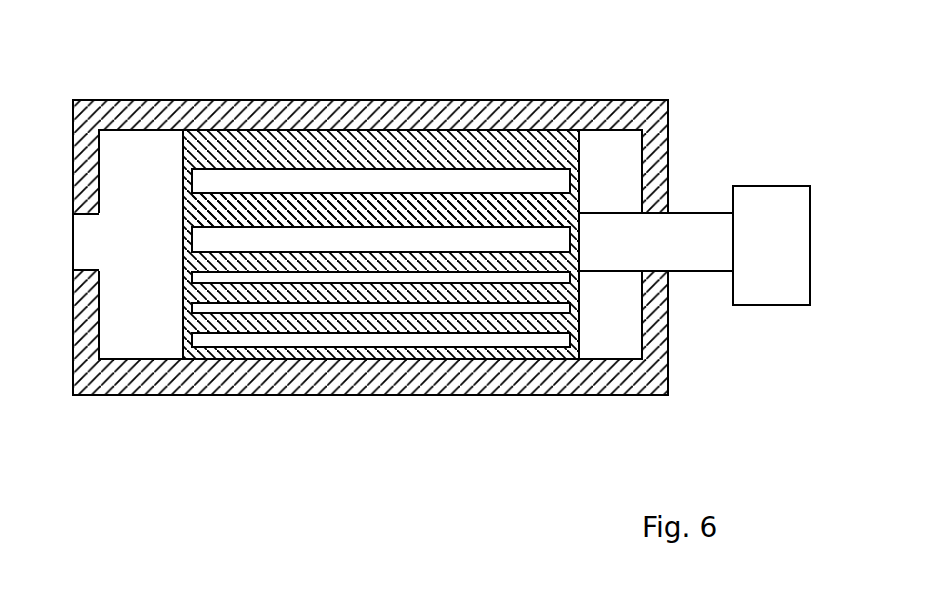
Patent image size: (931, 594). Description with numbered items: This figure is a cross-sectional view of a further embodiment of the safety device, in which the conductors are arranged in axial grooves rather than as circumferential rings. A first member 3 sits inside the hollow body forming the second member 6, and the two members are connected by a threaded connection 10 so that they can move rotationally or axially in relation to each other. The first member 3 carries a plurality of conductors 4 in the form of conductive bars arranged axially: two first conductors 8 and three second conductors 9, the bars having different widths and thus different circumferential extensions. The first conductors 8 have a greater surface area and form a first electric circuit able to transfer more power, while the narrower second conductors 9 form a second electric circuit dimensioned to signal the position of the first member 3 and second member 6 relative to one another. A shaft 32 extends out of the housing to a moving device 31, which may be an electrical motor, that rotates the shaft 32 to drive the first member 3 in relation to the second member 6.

The first member 3 is at (215, 343).
The conductors 4 is at (217, 185).
The second member 6 is at (622, 108).
The first conductors 8 is at (447, 185).
The second conductors 9 is at (438, 277).
The threaded connection 10 is at (673, 209).
The moving device 31 is at (760, 278).
The shaft 32 is at (685, 258).